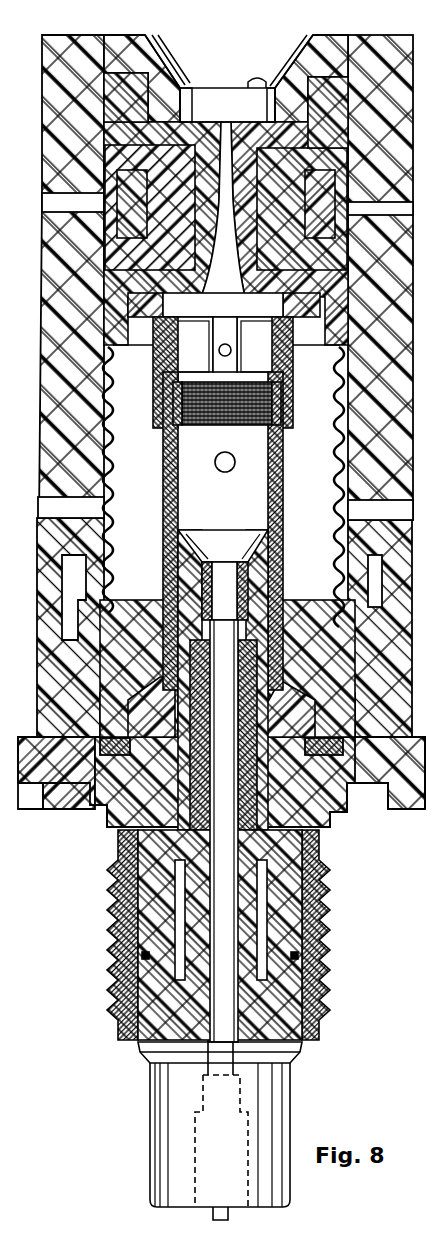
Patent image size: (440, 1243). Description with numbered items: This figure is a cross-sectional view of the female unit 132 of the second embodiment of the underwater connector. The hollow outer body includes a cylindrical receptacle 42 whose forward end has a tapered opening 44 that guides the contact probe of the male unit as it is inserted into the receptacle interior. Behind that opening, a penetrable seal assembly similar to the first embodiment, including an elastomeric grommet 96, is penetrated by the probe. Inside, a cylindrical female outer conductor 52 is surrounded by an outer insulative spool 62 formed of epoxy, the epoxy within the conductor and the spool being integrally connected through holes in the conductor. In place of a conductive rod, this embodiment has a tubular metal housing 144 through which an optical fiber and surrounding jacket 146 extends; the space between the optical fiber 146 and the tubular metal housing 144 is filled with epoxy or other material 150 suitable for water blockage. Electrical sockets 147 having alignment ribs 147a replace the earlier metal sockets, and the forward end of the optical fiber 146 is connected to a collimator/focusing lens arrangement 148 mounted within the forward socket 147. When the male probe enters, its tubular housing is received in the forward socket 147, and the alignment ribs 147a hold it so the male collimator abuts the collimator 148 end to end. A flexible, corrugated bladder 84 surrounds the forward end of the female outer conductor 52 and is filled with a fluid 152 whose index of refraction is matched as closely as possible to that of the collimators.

The receptacle 42 is at (45, 287).
The tapered opening 44 is at (285, 78).
The elastomeric grommet 96 is at (117, 140).
The second collimator/focusing lens arrangement 148 is at (238, 622).
The fluid 152 is at (156, 472).
The bladder 84 is at (333, 487).
The electrical sockets 147 is at (200, 586).
The alignment ribs 147a is at (226, 560).
The female unit 132 is at (104, 979).
The tubular metal housing 144 is at (190, 868).
The optical fiber and surrounding jacket 146 is at (220, 912).
The female outer conductor 52 is at (262, 878).
The outer insulative spool 62 is at (290, 927).
The epoxy or other material 150 is at (228, 972).